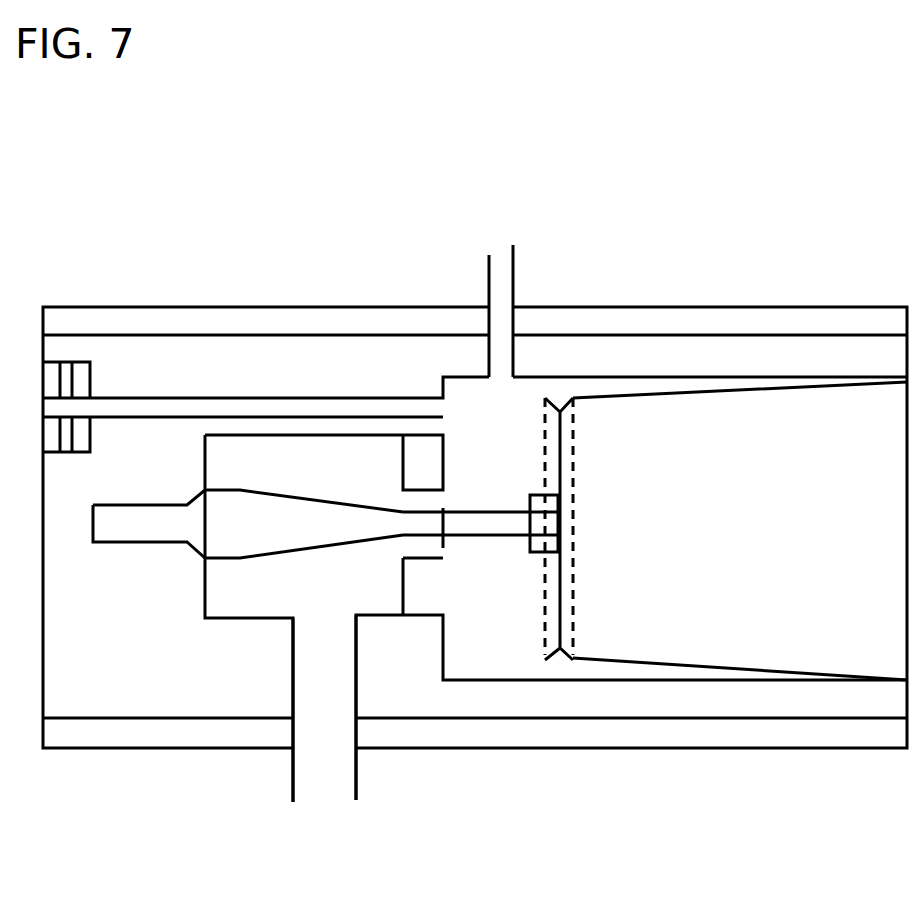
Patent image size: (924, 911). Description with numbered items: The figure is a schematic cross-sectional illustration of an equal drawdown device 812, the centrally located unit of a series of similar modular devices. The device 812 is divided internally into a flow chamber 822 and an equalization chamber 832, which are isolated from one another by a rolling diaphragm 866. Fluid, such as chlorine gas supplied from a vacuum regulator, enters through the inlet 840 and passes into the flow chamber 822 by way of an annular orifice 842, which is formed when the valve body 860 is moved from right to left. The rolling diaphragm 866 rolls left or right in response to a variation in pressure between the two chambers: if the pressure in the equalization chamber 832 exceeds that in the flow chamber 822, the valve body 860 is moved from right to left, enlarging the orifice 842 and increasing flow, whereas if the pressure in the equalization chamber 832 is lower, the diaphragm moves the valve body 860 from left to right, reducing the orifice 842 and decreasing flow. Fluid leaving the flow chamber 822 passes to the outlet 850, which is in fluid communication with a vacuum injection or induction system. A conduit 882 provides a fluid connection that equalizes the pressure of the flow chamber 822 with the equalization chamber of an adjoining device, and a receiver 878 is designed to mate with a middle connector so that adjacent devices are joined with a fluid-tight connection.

The equal drawdown device 812 is at (572, 237).
The flow chamber 822 is at (495, 603).
The equalization chamber 832 is at (745, 538).
The inlet 840 is at (320, 793).
The annular orifice 842 is at (413, 547).
The outlet 850 is at (500, 278).
The valve body 860 is at (285, 535).
The rolling diaphragm 866 is at (658, 395).
The receiver 878 is at (50, 373).
The conduit 882 is at (178, 407).